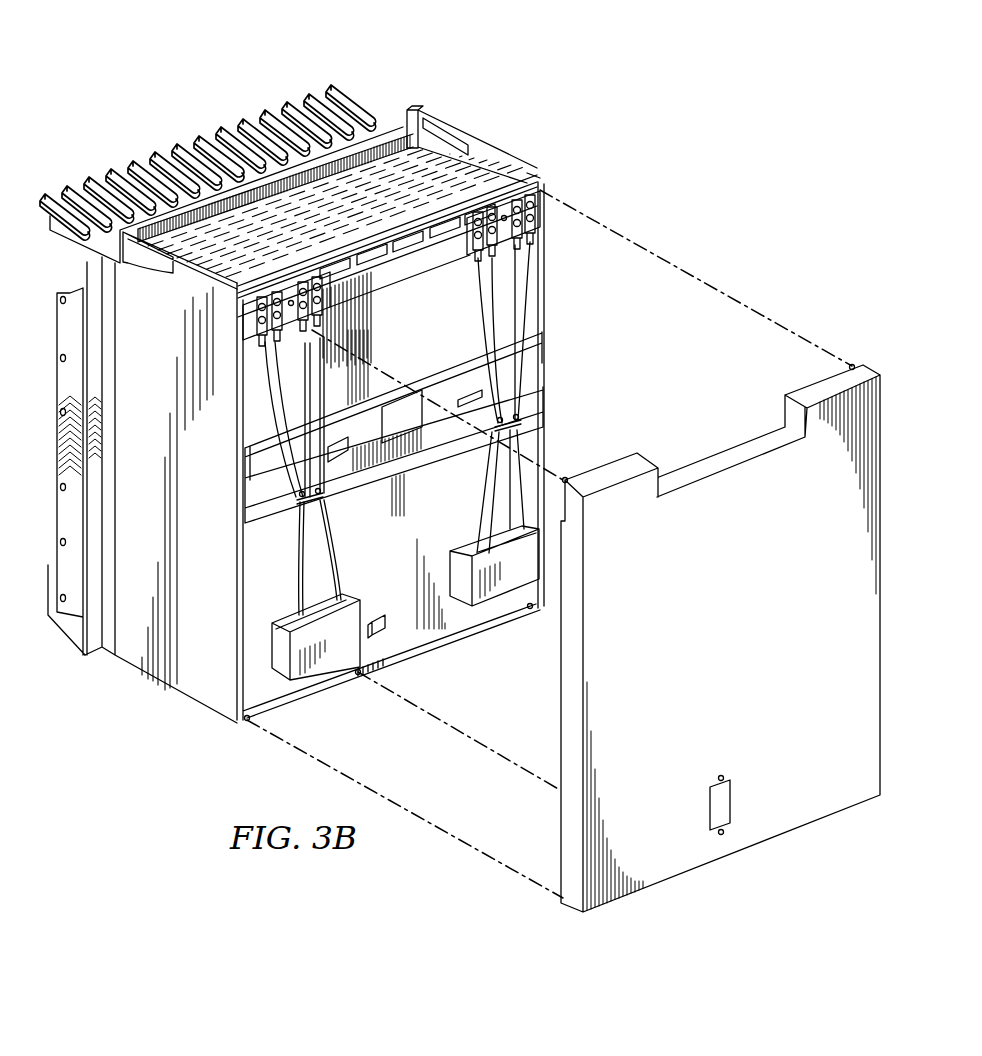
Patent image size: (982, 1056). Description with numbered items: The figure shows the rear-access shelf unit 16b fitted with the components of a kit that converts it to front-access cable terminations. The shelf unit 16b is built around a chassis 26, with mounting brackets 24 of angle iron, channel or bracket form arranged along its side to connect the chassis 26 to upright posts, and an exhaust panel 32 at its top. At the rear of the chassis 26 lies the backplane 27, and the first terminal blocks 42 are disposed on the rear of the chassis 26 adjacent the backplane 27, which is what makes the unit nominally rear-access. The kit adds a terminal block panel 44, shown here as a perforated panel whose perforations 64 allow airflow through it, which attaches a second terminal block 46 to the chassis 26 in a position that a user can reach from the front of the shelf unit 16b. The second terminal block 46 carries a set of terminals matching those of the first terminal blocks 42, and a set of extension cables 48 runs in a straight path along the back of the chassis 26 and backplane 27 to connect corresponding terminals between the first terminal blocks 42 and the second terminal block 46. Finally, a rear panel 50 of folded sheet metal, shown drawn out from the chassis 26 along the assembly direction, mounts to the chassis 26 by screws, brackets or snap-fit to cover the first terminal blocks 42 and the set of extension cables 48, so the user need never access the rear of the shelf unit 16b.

The shelf unit 16b is at (210, 64).
The mounting brackets 24 is at (98, 480).
The chassis 26 is at (161, 355).
The backplane 27 is at (460, 350).
The exhaust panel 32 is at (424, 182).
The terminal blocks 42 is at (320, 652).
The terminal block panel 44 is at (397, 268).
The terminal block 46 is at (283, 273).
The set of extension cables 48 is at (310, 563).
The rear panel 50 is at (749, 627).
The perforations 64 is at (440, 236).